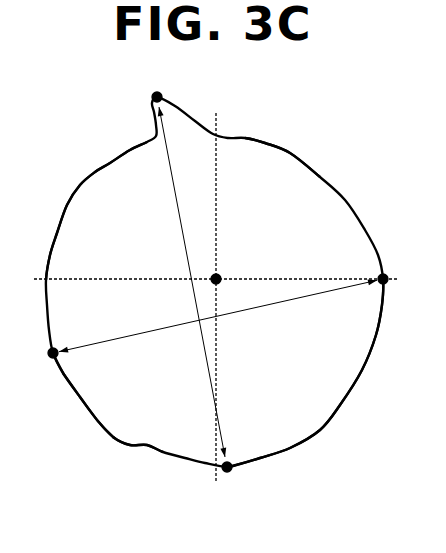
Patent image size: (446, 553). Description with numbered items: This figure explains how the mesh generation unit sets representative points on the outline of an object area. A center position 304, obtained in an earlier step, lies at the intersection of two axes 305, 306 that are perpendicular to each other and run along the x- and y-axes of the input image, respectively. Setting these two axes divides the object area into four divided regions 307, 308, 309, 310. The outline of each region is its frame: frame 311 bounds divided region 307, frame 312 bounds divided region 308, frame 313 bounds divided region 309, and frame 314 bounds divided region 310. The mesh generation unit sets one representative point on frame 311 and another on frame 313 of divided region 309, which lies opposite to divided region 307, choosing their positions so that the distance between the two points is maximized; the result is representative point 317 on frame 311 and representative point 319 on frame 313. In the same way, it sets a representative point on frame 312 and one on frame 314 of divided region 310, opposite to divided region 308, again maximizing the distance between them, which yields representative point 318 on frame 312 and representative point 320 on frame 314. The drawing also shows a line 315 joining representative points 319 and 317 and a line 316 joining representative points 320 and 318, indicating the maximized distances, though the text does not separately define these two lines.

The center position 304 is at (210, 276).
The axis 305 is at (308, 280).
The axis 306 is at (220, 190).
The divided region 307 is at (312, 205).
The divided region 308 is at (100, 223).
The divided region 309 is at (100, 405).
The divided region 310 is at (313, 377).
The frame of the divided region 311 is at (250, 138).
The frame of the divided region 312 is at (110, 163).
The frame of the divided region 313 is at (127, 445).
The frame of the divided region 314 is at (283, 443).
The line connecting points 319 and 317 315 is at (243, 310).
The line connecting points 320 and 318 316 is at (173, 187).
The representative point 317 is at (383, 273).
The representative point 318 is at (161, 94).
The representative point 319 is at (51, 359).
The representative point 320 is at (232, 473).